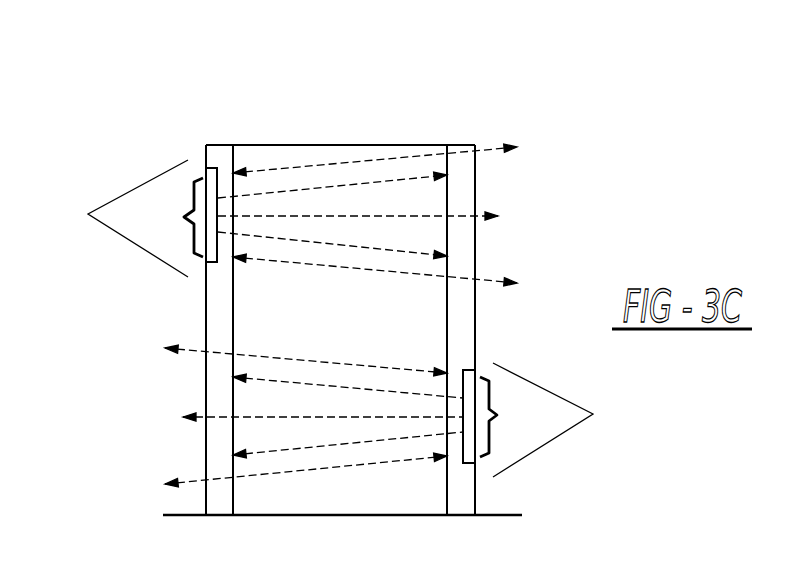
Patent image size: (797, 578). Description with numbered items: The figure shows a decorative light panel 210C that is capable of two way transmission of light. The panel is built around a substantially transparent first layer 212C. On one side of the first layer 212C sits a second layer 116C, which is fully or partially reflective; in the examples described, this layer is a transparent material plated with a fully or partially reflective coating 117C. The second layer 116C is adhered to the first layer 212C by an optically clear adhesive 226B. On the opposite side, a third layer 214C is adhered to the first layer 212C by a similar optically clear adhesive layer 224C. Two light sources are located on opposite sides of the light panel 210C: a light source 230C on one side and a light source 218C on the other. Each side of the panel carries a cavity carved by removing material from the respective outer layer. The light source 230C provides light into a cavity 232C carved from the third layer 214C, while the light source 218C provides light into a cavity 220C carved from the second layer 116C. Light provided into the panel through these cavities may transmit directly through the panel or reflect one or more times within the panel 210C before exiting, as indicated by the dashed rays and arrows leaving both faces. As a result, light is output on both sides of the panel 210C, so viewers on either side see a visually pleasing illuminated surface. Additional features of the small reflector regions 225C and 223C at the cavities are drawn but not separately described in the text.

The light panel 210C is at (419, 95).
The first layer 212C is at (348, 168).
The third layer 214C is at (222, 452).
The optically clear adhesive layer 224C is at (233, 320).
The second layer 116C is at (457, 237).
The reflective coating 117C is at (475, 178).
The optically clear adhesive 226B is at (447, 265).
The first reflector element 225C is at (213, 193).
The cavity 232C is at (169, 217).
The light source 230C is at (108, 220).
The second reflector element 223C is at (467, 372).
The cavity 220C is at (512, 417).
The light source 218C is at (565, 422).